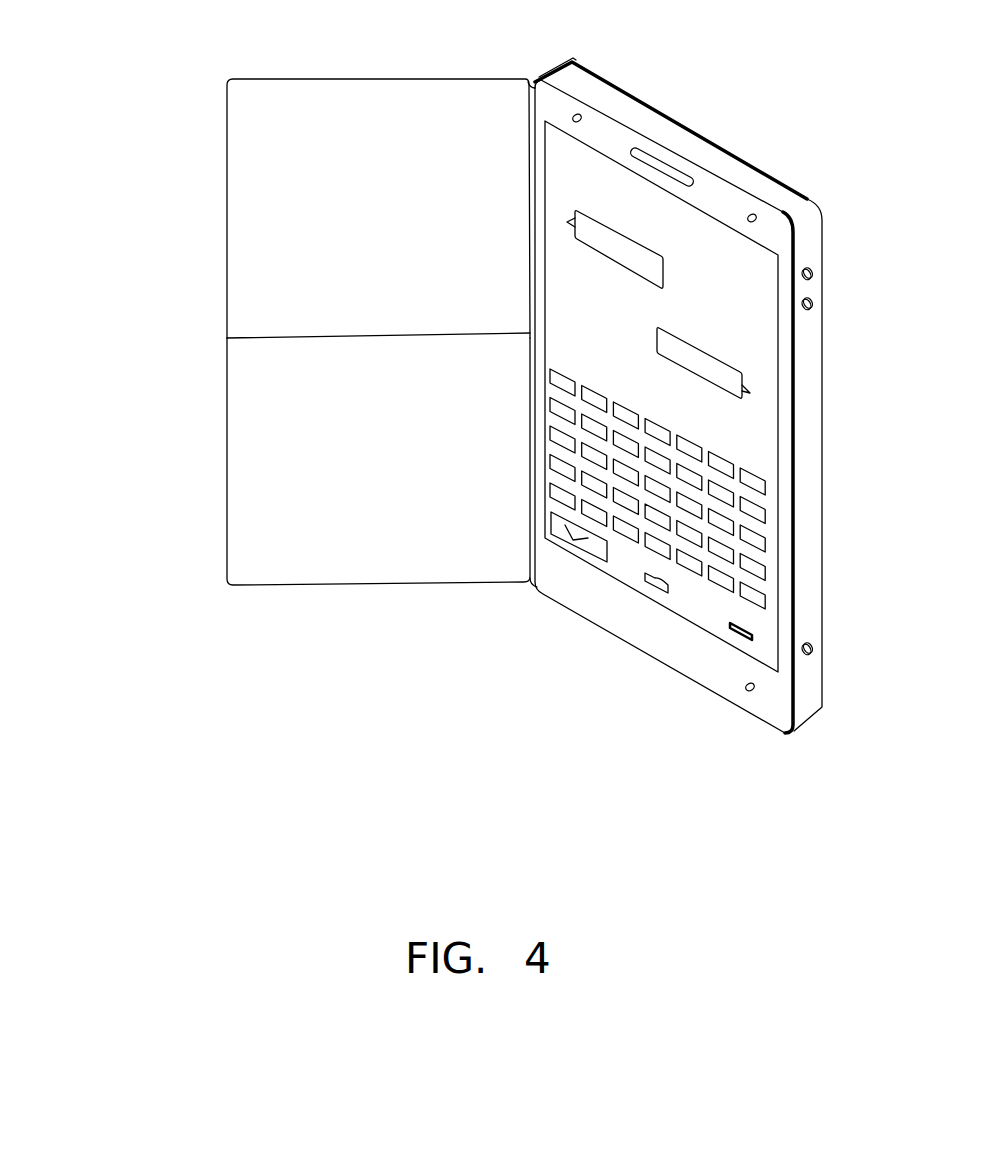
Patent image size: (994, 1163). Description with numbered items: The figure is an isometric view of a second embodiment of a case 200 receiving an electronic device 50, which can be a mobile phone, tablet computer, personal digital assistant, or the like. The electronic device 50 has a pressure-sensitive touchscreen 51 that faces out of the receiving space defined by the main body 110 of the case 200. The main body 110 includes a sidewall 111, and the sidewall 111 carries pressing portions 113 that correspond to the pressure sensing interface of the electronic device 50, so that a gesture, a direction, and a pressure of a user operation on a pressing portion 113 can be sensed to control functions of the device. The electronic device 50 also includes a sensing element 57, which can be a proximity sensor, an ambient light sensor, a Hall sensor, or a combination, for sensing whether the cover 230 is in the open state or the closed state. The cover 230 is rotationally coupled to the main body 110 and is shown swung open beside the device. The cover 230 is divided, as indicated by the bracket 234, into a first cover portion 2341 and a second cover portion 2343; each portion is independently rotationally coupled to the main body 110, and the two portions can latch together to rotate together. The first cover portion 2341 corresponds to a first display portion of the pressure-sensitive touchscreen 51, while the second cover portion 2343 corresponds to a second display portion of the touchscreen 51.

The case 200 is at (718, 397).
The main body 110 is at (718, 398).
The sidewall 111 is at (805, 493).
The pressing portion 113 is at (820, 298).
The sensing element 57 is at (758, 222).
The electronic device 50 is at (661, 364).
The pressure-sensitive touchscreen 51 is at (583, 158).
The cover 230 is at (294, 299).
The cover body 234 is at (294, 333).
The first cover portion 2341 is at (332, 462).
The second cover portion 2343 is at (232, 251).